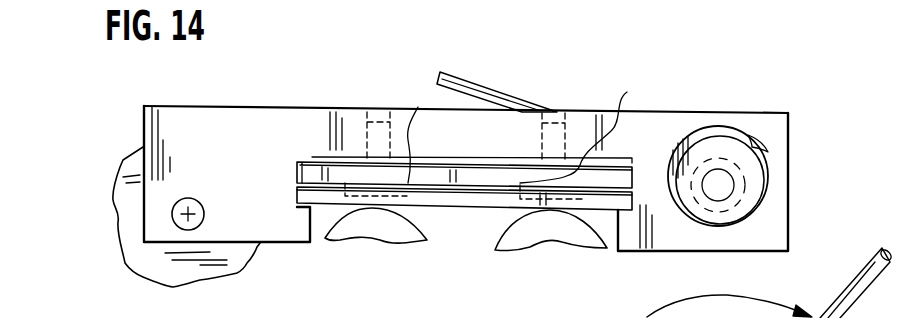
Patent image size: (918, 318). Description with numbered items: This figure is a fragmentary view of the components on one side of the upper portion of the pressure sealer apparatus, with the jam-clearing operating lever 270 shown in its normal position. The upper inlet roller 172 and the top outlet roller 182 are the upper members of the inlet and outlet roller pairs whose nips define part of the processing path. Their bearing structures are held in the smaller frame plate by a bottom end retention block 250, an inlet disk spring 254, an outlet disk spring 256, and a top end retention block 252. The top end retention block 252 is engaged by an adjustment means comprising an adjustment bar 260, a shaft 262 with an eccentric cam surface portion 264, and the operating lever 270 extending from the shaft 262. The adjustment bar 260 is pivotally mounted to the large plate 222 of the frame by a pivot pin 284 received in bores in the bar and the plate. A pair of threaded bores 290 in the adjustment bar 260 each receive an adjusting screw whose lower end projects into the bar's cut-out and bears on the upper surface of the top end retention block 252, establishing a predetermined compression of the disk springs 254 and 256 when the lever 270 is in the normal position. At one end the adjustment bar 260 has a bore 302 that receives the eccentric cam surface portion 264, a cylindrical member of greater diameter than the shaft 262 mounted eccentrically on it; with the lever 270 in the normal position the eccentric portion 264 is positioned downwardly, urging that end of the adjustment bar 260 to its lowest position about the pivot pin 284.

The upper inlet roller 172 is at (427, 234).
The top outlet roller 182 is at (497, 244).
The large plate 222 is at (122, 245).
The bottom end retention block 250 is at (297, 176).
The top end retention block 252 is at (294, 206).
The inlet disk spring 254 is at (418, 107).
The outlet disk spring 256 is at (627, 92).
The adjustment bar 260 is at (791, 111).
The shaft 262 is at (718, 185).
The cam surface portion 264 is at (766, 165).
The operating lever 270 is at (470, 73).
The pivot pin 284 is at (172, 214).
The threaded bores 290 is at (360, 130).
The bore 302 is at (762, 150).